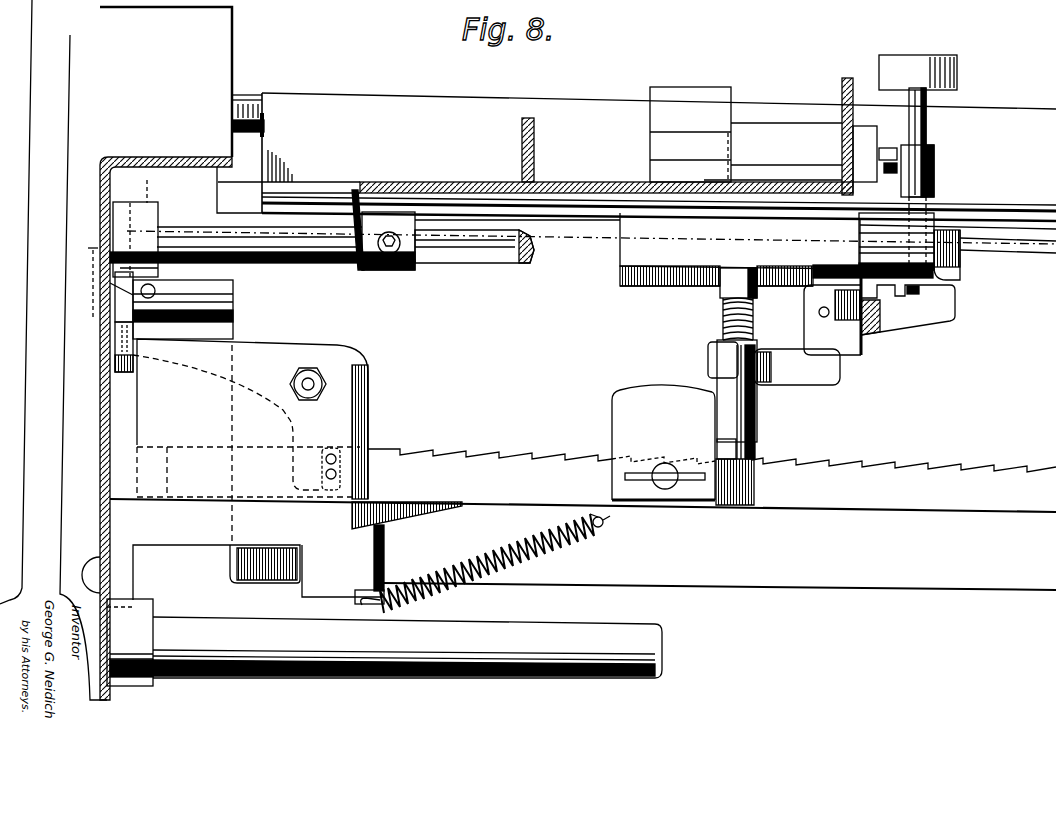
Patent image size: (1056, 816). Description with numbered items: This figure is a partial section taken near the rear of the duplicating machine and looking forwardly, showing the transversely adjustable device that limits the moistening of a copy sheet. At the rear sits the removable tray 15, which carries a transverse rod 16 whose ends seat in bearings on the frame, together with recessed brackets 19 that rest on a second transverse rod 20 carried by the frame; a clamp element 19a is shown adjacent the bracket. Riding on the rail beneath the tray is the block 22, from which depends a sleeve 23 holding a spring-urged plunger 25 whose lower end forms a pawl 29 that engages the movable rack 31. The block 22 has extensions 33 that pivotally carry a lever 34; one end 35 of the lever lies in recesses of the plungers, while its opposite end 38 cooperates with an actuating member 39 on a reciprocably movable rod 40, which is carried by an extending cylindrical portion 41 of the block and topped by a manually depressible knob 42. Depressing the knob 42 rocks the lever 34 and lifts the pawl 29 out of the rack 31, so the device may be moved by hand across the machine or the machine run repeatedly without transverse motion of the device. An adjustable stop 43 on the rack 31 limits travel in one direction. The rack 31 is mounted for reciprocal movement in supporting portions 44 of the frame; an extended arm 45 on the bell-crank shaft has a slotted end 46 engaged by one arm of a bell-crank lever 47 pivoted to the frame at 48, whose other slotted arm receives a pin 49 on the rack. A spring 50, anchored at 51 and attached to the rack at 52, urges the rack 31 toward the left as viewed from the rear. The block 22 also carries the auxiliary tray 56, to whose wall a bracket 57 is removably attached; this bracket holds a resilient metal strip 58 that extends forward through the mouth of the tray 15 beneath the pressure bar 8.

The pressure bar 8 is at (48, 322).
The removable tray 15 is at (264, 151).
The transverse rod 16 is at (244, 98).
The recessed brackets 19 is at (362, 272).
The clamp screw 19a is at (410, 279).
The transverse rod 20 is at (496, 265).
The block 22 is at (628, 259).
The depending sleeve 23 is at (720, 288).
The plunger 25 is at (722, 325).
The pawl 29 is at (757, 414).
The rack 31 is at (531, 455).
The extensions 33 is at (842, 356).
The lever 34 is at (914, 327).
The end of lever 35 is at (708, 358).
The opposite end of lever 38 is at (943, 303).
The actuating member 39 is at (960, 266).
The reciprocably movable rod 40 is at (927, 129).
The extending cylindrical portion 41 is at (966, 239).
The manually depressible button or knob 42 is at (957, 57).
The adjustable stop 43 is at (645, 394).
The supporting portions 44 is at (150, 494).
The extended arm 45 is at (156, 290).
The slotted end 46 is at (134, 357).
The bell-crank lever 47 is at (287, 345).
The pivot 48 is at (326, 383).
The pin 49 is at (370, 437).
The spring 50 is at (594, 544).
The anchor 51 is at (365, 608).
The spring attachment 52 is at (618, 520).
The auxiliary tray 56 is at (843, 141).
The bracket 57 is at (775, 125).
The resilient metal strip 58 is at (711, 77).